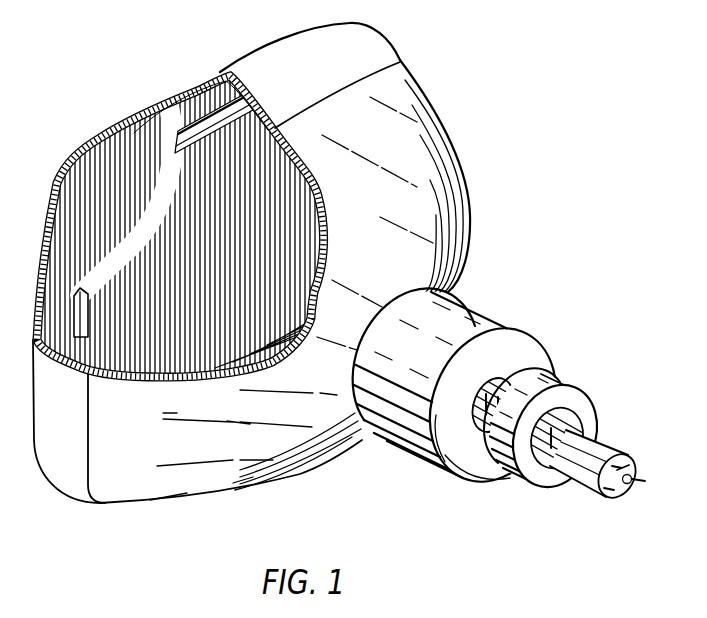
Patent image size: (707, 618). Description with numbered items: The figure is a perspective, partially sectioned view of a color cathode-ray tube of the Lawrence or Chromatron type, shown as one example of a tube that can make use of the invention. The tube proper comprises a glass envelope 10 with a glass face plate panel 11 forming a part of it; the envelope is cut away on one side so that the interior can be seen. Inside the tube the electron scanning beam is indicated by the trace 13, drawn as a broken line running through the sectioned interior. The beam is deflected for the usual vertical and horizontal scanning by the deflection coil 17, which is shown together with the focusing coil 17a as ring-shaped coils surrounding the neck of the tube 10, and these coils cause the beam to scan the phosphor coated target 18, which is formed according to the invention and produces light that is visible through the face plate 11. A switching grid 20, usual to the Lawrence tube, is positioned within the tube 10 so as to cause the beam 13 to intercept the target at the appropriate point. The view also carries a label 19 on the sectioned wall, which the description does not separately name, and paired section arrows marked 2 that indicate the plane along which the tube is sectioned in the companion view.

The glass envelope 10 is at (139, 508).
The glass face plate panel 11 is at (386, 45).
The scanning beam trace 13 is at (165, 205).
The deflection coil 17 is at (541, 339).
The focusing coil 17a is at (567, 381).
The phosphor coated target 18 is at (200, 93).
The outer shell 19 is at (92, 148).
The switching grid 20 is at (176, 132).
The section line 2- 2 is at (176, 100).